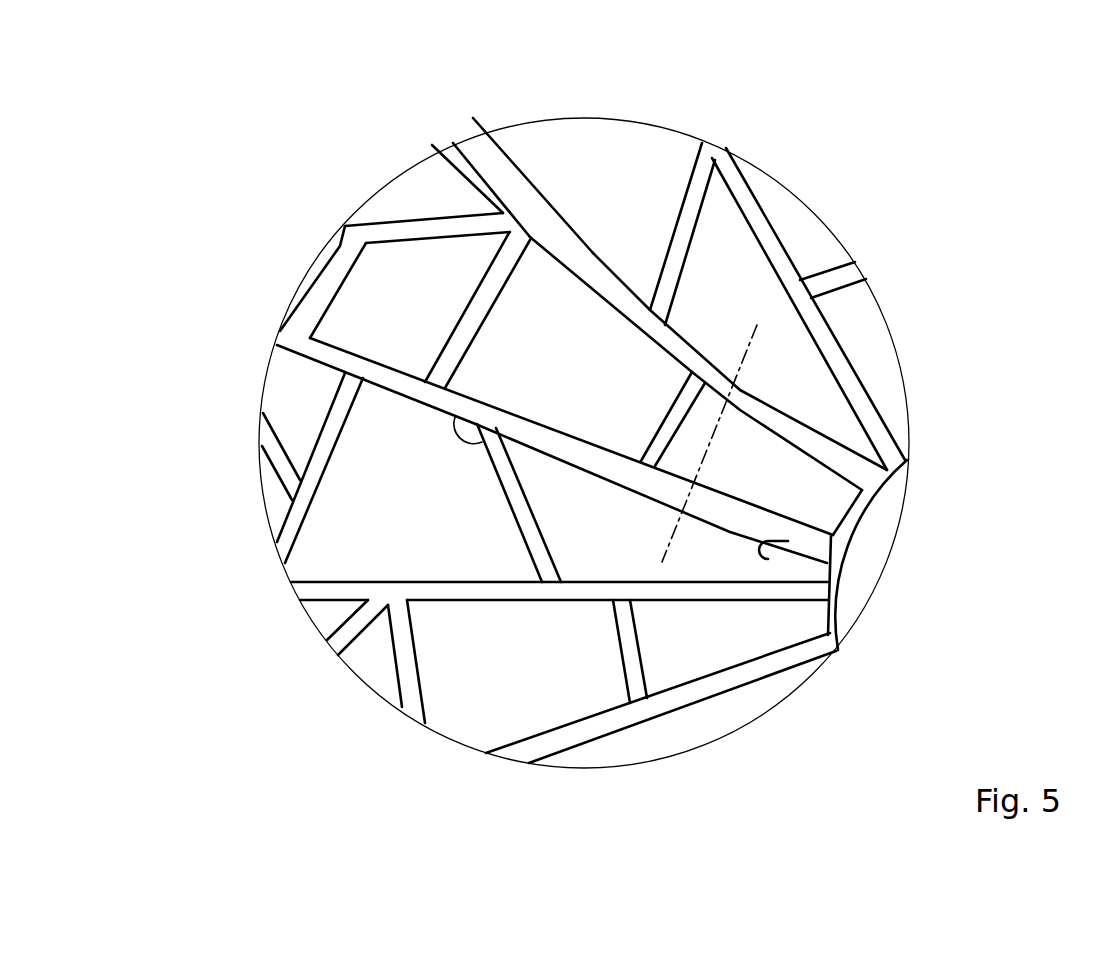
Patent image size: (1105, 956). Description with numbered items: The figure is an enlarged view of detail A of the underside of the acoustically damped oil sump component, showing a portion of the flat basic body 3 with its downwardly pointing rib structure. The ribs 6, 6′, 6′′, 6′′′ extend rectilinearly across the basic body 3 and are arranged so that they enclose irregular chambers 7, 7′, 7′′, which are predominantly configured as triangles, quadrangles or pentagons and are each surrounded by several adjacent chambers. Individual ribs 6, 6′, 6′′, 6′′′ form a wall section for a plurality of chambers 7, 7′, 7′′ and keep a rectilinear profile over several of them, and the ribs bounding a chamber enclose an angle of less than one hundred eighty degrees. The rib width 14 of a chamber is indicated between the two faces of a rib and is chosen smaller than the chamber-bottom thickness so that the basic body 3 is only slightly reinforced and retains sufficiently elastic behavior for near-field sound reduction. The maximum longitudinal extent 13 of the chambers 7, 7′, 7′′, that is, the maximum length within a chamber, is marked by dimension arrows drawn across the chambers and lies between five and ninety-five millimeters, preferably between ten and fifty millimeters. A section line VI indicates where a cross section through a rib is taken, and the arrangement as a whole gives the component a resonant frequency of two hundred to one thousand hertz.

The basic body 3 is at (891, 286).
The rib 6 is at (672, 283).
The rib 6′ is at (497, 283).
The rib 6′′ is at (500, 213).
The rib 6′′′ is at (387, 232).
The chamber 7 is at (781, 496).
The chamber 7′ is at (736, 304).
The chamber 7′′ is at (612, 561).
The maximum longitudinal extent 13 is at (640, 458).
The rib width 14 is at (699, 423).
The detail A is at (792, 148).
The section line VI is at (760, 388).